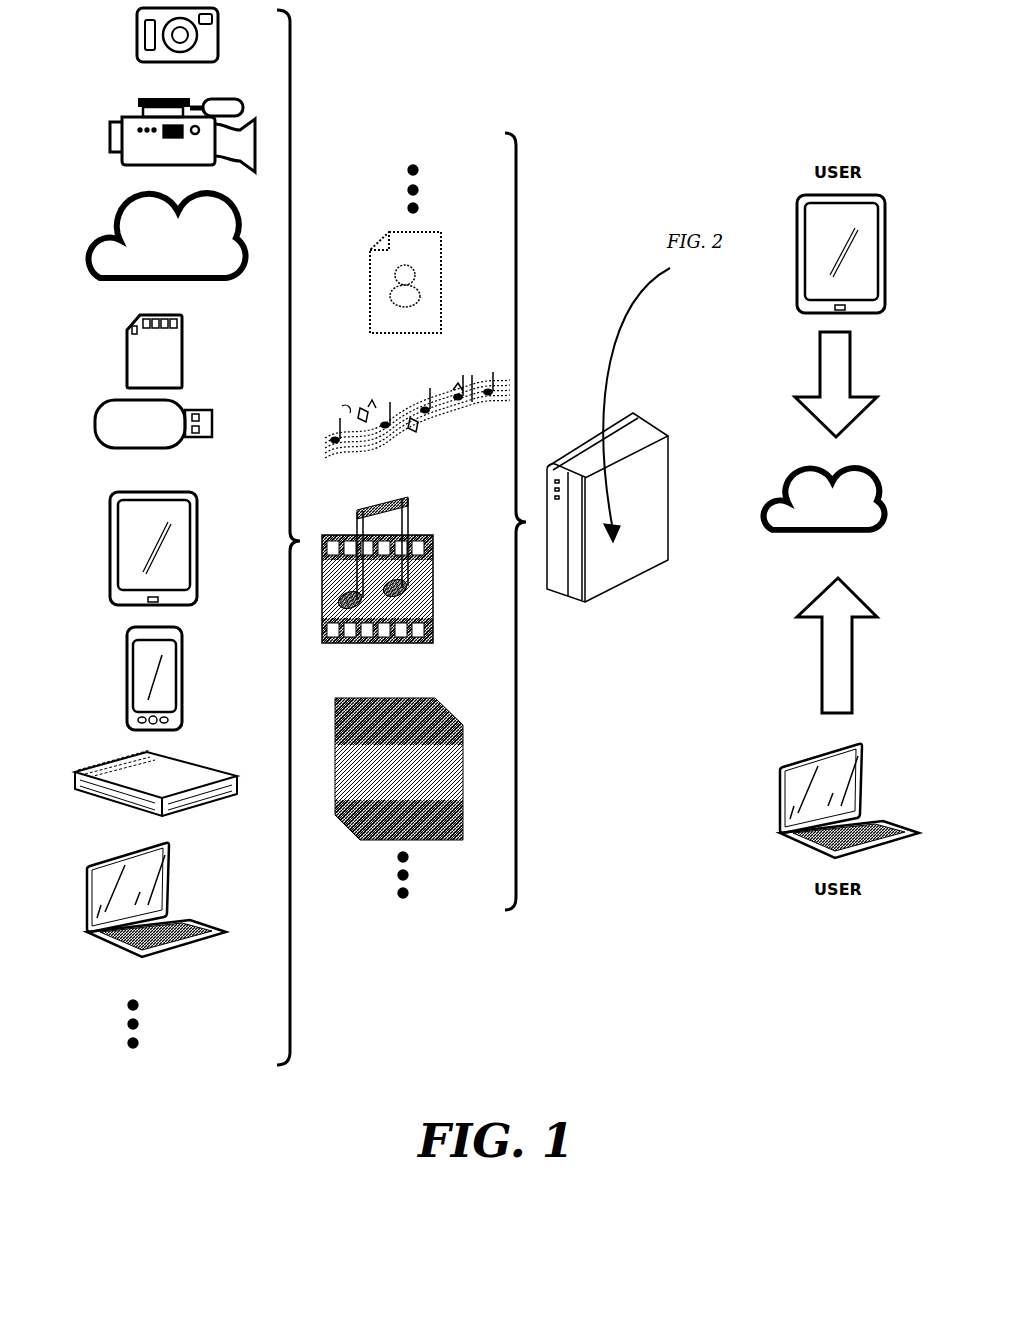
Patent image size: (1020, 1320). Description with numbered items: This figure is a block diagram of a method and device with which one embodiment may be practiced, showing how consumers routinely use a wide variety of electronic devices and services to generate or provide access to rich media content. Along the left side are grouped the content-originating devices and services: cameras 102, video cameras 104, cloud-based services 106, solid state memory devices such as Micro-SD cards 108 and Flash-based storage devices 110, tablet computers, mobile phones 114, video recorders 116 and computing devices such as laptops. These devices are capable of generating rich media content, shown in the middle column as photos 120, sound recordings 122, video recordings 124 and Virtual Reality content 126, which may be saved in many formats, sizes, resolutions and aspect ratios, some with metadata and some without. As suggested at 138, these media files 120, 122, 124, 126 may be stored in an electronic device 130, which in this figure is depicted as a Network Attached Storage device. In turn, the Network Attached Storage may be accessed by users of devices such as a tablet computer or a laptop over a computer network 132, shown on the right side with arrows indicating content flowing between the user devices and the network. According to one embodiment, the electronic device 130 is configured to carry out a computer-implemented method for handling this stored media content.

The camera 102 is at (137, 35).
The video camera 104 is at (112, 138).
The cloud-based service 106 is at (116, 233).
The Micro-SD card 108 is at (127, 341).
The Flash-based storage device 110 is at (95, 426).
The mobile phone 114 is at (127, 678).
The video recorder 116 is at (75, 783).
The photos 120 is at (370, 277).
The sound recordings 122 is at (440, 390).
The video recordings 124 is at (425, 538).
The VR content 126 is at (432, 698).
The electronic device 130 is at (645, 426).
The computer network 132 is at (821, 478).
The stored media files 138 is at (520, 840).